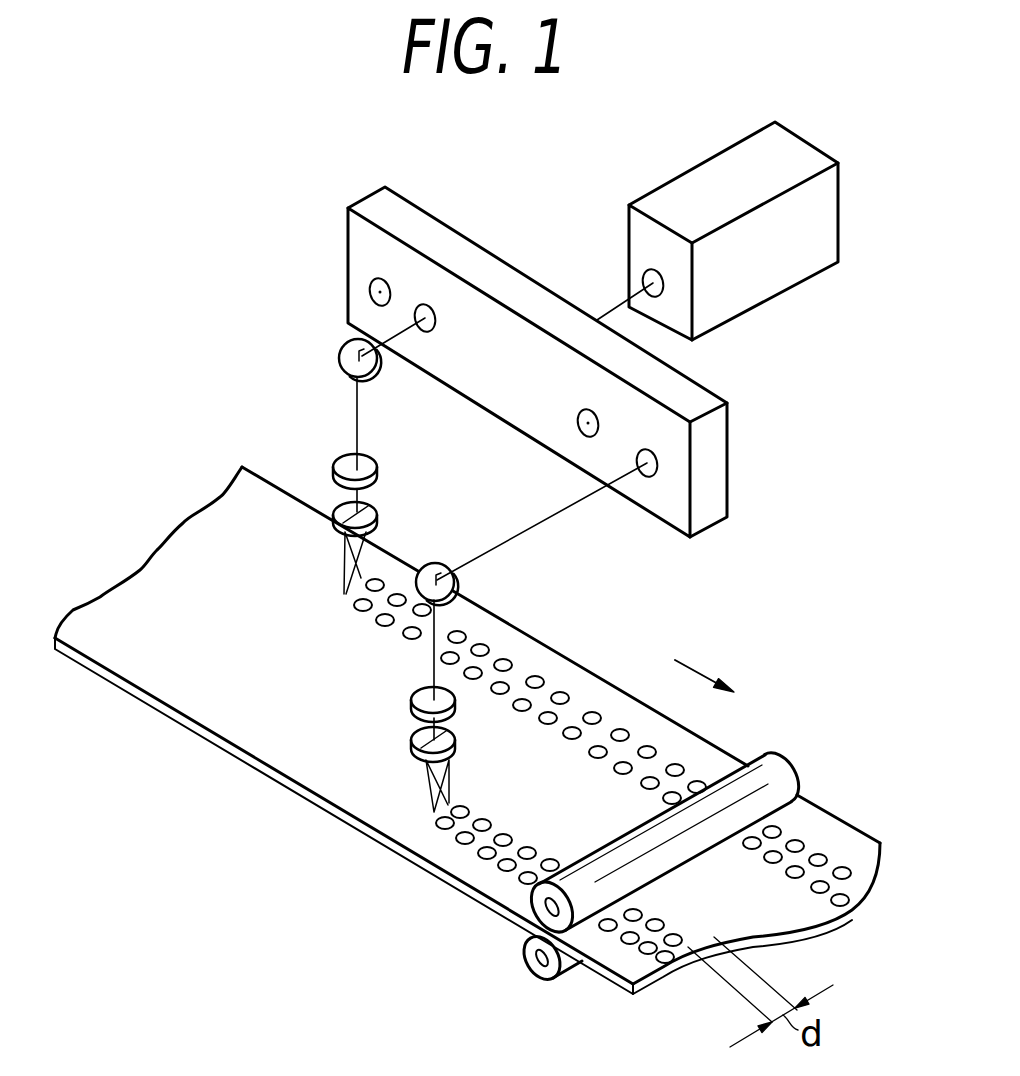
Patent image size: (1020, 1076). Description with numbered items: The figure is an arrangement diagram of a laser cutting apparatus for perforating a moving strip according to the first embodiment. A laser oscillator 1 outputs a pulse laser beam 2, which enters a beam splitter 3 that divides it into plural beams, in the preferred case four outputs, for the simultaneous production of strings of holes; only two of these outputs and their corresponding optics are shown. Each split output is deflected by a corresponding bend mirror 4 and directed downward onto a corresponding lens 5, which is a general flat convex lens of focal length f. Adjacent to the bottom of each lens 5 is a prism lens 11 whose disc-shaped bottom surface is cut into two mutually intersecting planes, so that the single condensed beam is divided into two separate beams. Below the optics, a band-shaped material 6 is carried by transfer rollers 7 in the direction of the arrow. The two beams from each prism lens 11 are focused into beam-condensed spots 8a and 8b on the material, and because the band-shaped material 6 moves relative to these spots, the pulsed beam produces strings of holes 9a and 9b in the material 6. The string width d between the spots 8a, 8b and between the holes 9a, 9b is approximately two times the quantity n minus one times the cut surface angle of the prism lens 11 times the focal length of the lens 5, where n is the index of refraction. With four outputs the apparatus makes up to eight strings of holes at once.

The laser oscillator 1 is at (832, 215).
The laser beam 2 is at (607, 303).
The beam splitter 3 is at (713, 475).
The bend mirror 4 is at (342, 362).
The lens 5 is at (337, 467).
The band-shaped material 6 is at (283, 755).
The transfer roller 7 is at (535, 977).
The beam-condensed spot 8a is at (428, 817).
The beam-condensed spot 8b is at (446, 821).
The hole 9a is at (650, 953).
The hole 9b is at (658, 924).
The prism lens 11 is at (332, 524).